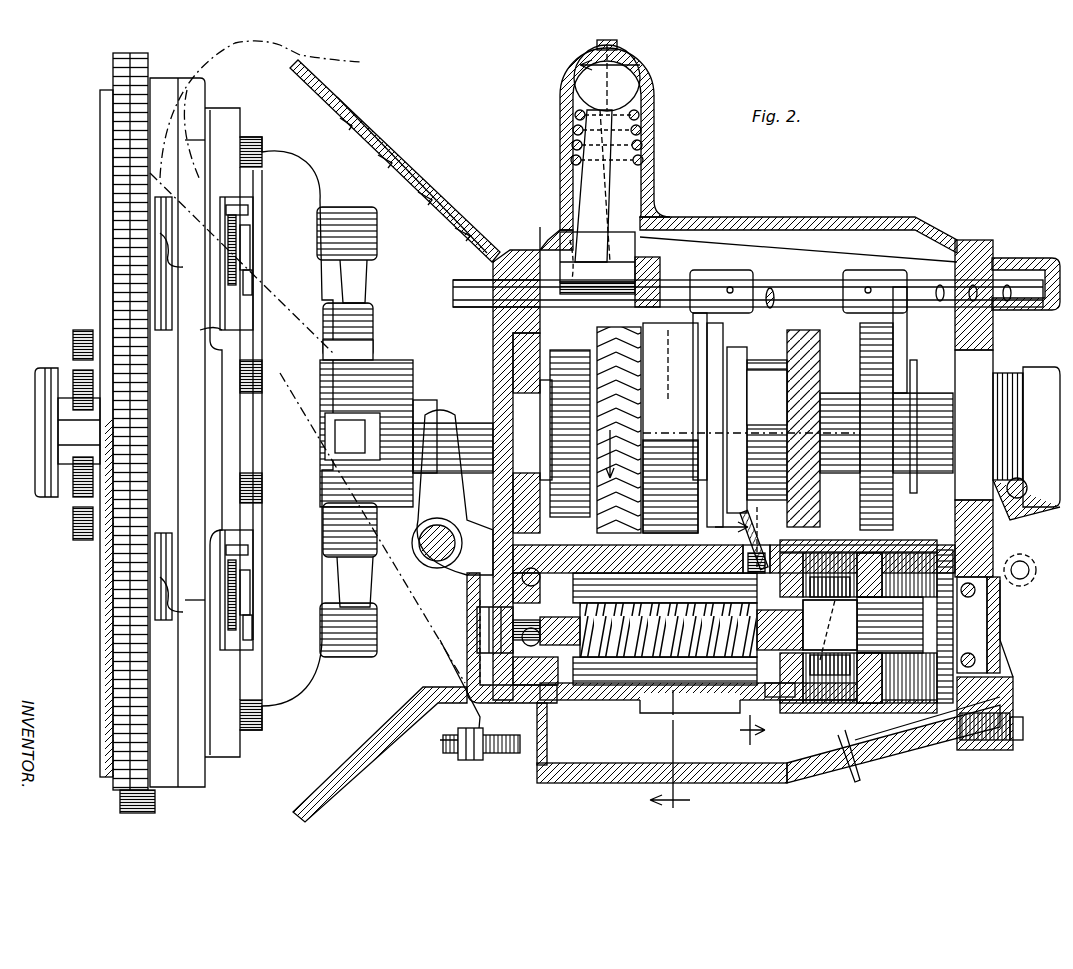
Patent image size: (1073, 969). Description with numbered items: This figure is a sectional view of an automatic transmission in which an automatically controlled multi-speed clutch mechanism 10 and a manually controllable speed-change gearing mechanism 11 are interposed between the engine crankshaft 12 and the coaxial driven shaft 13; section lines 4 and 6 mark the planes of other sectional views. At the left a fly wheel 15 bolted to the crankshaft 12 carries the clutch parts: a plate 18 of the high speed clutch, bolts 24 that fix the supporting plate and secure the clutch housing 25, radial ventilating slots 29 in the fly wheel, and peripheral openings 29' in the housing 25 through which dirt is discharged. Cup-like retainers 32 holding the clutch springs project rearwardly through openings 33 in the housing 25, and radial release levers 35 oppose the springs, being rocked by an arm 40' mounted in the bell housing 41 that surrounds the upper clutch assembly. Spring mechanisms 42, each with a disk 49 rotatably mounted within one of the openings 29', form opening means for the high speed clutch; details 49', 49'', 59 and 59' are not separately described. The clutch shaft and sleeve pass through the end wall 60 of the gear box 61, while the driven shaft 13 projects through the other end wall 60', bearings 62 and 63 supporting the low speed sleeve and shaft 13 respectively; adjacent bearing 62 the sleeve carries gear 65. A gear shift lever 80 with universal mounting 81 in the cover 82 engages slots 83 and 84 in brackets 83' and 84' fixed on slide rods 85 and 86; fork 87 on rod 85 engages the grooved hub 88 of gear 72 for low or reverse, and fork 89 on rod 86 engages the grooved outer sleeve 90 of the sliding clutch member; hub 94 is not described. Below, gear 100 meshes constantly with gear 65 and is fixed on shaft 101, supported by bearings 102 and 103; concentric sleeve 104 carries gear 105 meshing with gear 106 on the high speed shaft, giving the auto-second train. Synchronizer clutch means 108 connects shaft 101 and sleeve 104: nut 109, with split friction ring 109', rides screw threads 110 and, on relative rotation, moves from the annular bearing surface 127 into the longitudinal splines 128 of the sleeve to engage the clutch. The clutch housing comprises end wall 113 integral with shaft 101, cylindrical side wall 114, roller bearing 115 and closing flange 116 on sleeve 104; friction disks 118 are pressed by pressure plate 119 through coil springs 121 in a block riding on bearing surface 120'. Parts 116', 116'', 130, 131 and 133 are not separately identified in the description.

The section line 4- 4 is at (645, 432).
The section line 6- 6 is at (740, 627).
The multi-speed clutch mechanism 10 is at (282, 146).
The selective speed-change gearing mechanism 11 is at (815, 210).
The driving crankshaft 12 is at (62, 485).
The driven shaft 13 is at (932, 458).
The fly wheel 15 is at (94, 592).
The plate 18 is at (230, 316).
The bolts 24 is at (255, 395).
The clutch housing 25 is at (288, 700).
The radial ventilating slots 29 is at (178, 427).
The peripheral openings 29' is at (197, 437).
The cup-like retainers 32 is at (348, 210).
The openings 33 is at (345, 560).
The clutch release levers 35 is at (362, 428).
The arm 40' is at (452, 492).
The bell housing 41 is at (340, 770).
The spring mechanisms 42 is at (248, 256).
The disk 49 is at (237, 437).
The spring seat 49' is at (274, 417).
The spring retainer 49'' is at (267, 374).
The release pedal arm 59 is at (325, 362).
The brake pedal arm 59' is at (919, 753).
The end wall 60 is at (513, 465).
The end wall 60' is at (1007, 289).
The gear box 61 is at (535, 740).
The bearing 62 is at (510, 352).
The bearing 63 is at (975, 372).
The gear 65 is at (563, 350).
The gear 72 is at (805, 340).
The gear shift lever 80 is at (590, 182).
The universal mounting 81 is at (640, 85).
The cover 82 is at (654, 185).
The slot 83 is at (602, 241).
The bracket 83' is at (674, 271).
The slot 84 is at (536, 224).
The bracket 84' is at (597, 275).
The slide rod 85 is at (815, 282).
The slide rod 86 is at (767, 283).
The fork 87 is at (907, 345).
The grooved hub 88 is at (917, 375).
The fork 89 is at (716, 345).
The grooved outer sleeve 90 is at (694, 419).
The gear hub 94 is at (767, 362).
The gear 100 is at (557, 765).
The shaft 101 is at (605, 615).
The bearing 102 is at (608, 695).
The bearing 103 is at (1000, 650).
The concentric sleeve 104 is at (690, 705).
The gear 105 is at (650, 700).
The gear 106 is at (640, 465).
The clutch means 108 is at (810, 750).
The nut 109 is at (782, 712).
The expansive split ring 109' is at (734, 555).
The screw threads 110 is at (688, 655).
The end wall 113 is at (975, 577).
The cylindrical side wall 114 is at (905, 545).
The roller bearing 115 is at (765, 538).
The flange 116 is at (737, 555).
The splined hub 116' is at (930, 625).
The pressure ring 116'' is at (824, 610).
The friction disks 118 is at (935, 720).
The pressure plate 119 is at (882, 690).
The annular bearing surface 120' is at (842, 655).
The expansive coil springs 121 is at (830, 700).
The annular bearing surface 127 is at (600, 705).
The longitudinal splines 128 is at (705, 725).
The bracket 130 is at (475, 725).
The pivot pin 131 is at (1028, 565).
The bolt 133 is at (515, 755).